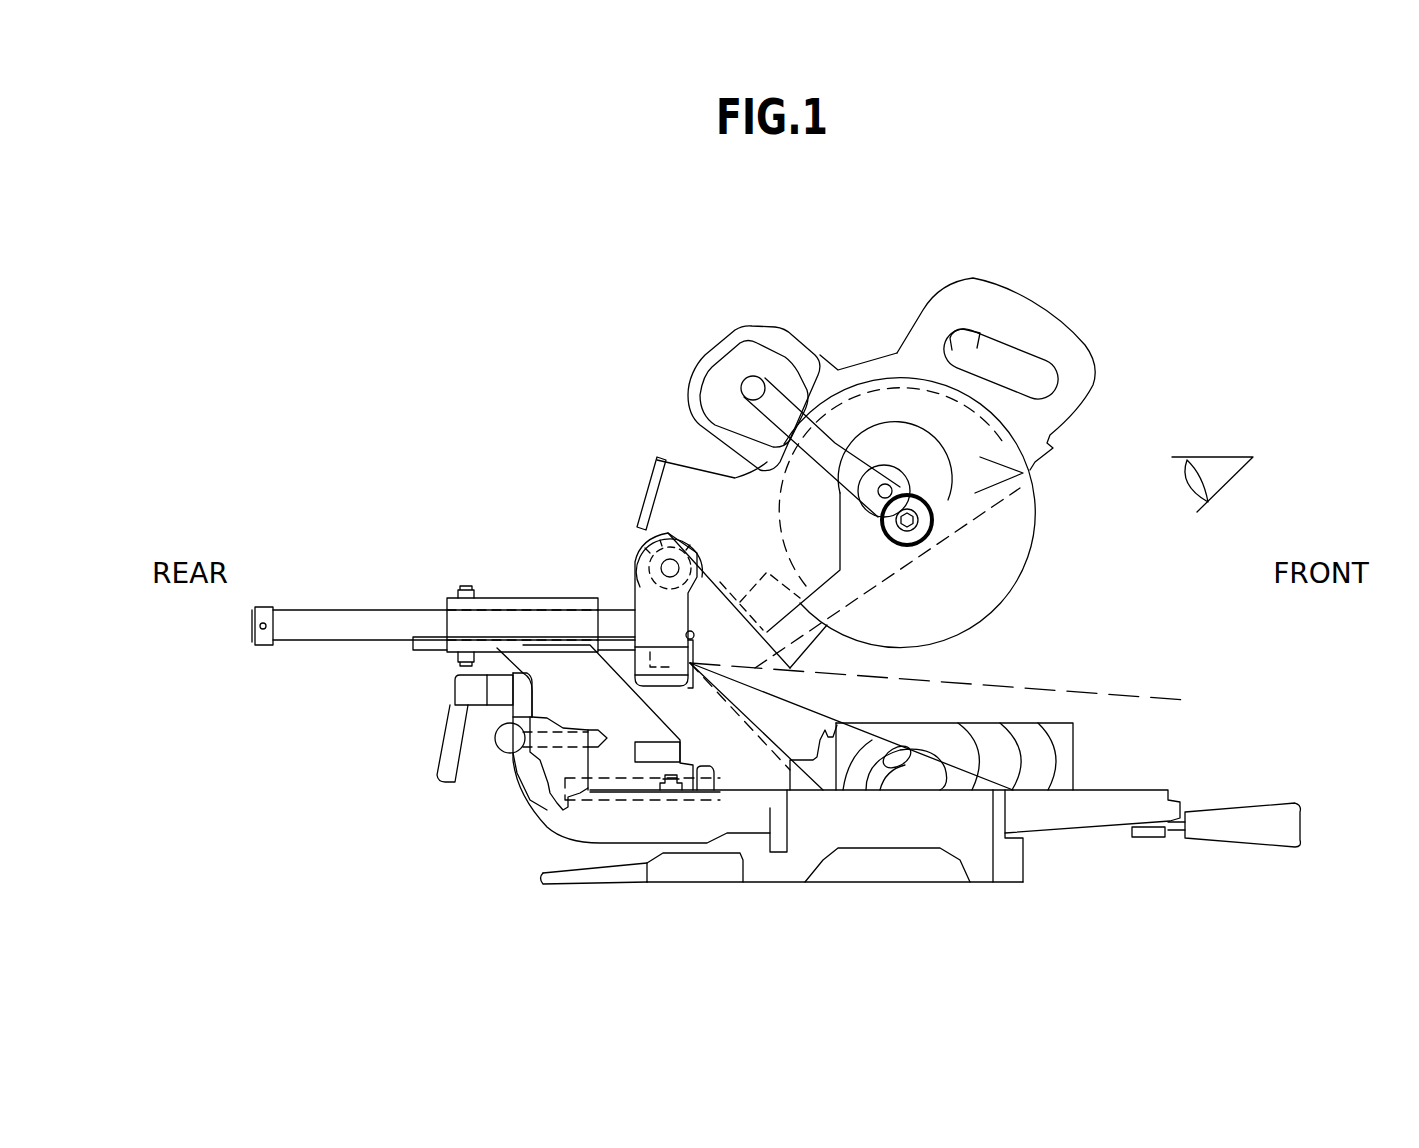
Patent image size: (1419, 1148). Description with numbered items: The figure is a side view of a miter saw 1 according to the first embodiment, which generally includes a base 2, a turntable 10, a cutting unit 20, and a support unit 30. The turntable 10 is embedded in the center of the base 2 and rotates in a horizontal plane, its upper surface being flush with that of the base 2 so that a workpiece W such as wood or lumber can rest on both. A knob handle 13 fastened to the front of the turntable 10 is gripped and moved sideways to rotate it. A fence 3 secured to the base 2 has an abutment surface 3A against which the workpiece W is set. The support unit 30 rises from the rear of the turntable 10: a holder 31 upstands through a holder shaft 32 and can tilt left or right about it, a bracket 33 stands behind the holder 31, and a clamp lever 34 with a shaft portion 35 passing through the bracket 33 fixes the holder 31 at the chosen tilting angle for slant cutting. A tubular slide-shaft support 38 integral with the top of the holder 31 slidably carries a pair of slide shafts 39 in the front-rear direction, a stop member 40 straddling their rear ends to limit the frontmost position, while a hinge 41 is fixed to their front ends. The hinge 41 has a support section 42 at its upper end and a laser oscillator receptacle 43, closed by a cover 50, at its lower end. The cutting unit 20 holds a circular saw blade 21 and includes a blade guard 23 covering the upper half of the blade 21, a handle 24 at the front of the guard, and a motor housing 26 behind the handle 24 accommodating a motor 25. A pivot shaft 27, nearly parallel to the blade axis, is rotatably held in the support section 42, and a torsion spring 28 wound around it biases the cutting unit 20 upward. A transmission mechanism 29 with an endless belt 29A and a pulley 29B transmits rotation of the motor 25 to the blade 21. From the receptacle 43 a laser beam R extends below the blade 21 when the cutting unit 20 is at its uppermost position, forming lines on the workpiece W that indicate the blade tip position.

The miter saw 1 is at (1180, 324).
The base 2 is at (983, 872).
The fence 3 is at (815, 777).
The abutment surface 3A is at (853, 757).
The turntable 10 is at (1060, 822).
The knob handle 13 is at (1240, 813).
The cutting unit 20 is at (684, 382).
The circular saw blade 21 is at (1017, 562).
The blade guard 23 is at (1023, 473).
The handle 24 is at (1033, 311).
The motor 25 is at (765, 350).
The motor housing 26 is at (743, 328).
The pivot shaft 27 is at (640, 587).
The torsion spring 28 is at (667, 528).
The transmission mechanism 29 is at (918, 243).
The endless belt 29A is at (884, 464).
The pulley 29B is at (890, 484).
The support unit 30 is at (505, 798).
The holder 31 is at (644, 723).
The holder shaft 32 is at (700, 773).
The bracket 33 is at (533, 790).
The clamp lever 34 is at (460, 690).
The shaft portion 35 is at (497, 752).
The slide-shaft support 38 is at (530, 600).
The slide shafts 39 is at (352, 621).
The stop member 40 is at (267, 604).
The hinge 41 is at (668, 620).
The support section 42 is at (668, 568).
The laser oscillator receptacle 43 is at (636, 667).
The cover 50 is at (690, 655).
The laser beam R is at (1068, 684).
The workpiece W is at (1070, 751).